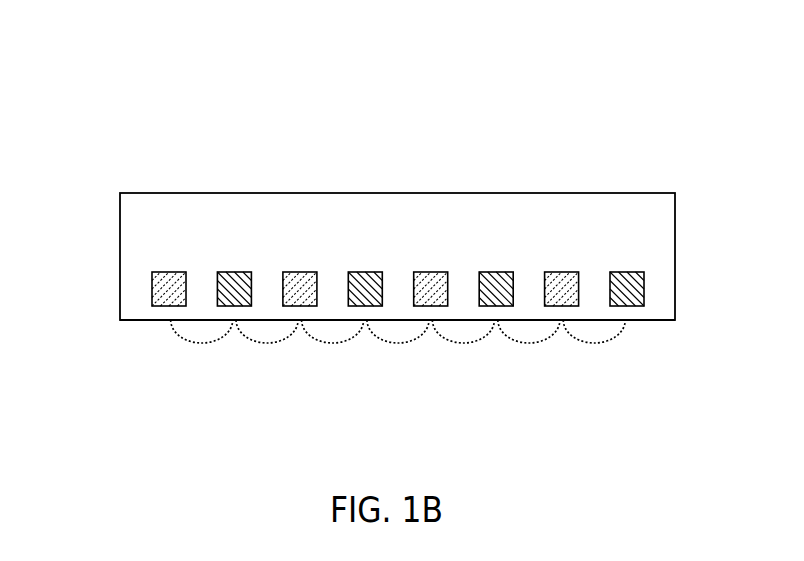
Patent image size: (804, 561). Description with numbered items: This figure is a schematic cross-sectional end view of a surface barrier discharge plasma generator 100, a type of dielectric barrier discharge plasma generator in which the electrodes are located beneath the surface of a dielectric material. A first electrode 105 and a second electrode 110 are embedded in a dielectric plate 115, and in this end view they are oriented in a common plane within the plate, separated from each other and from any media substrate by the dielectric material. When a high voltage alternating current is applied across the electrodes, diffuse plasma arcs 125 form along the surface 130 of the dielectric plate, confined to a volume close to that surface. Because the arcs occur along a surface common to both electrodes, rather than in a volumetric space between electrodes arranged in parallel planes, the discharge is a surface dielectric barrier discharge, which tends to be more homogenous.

The surface barrier discharge plasma generator 100 is at (196, 78).
The first electrode 105 is at (173, 290).
The second electrode 110 is at (228, 283).
The dielectric plate 115 is at (392, 212).
The plasma arcs 125 is at (332, 332).
The surface 130 is at (650, 321).